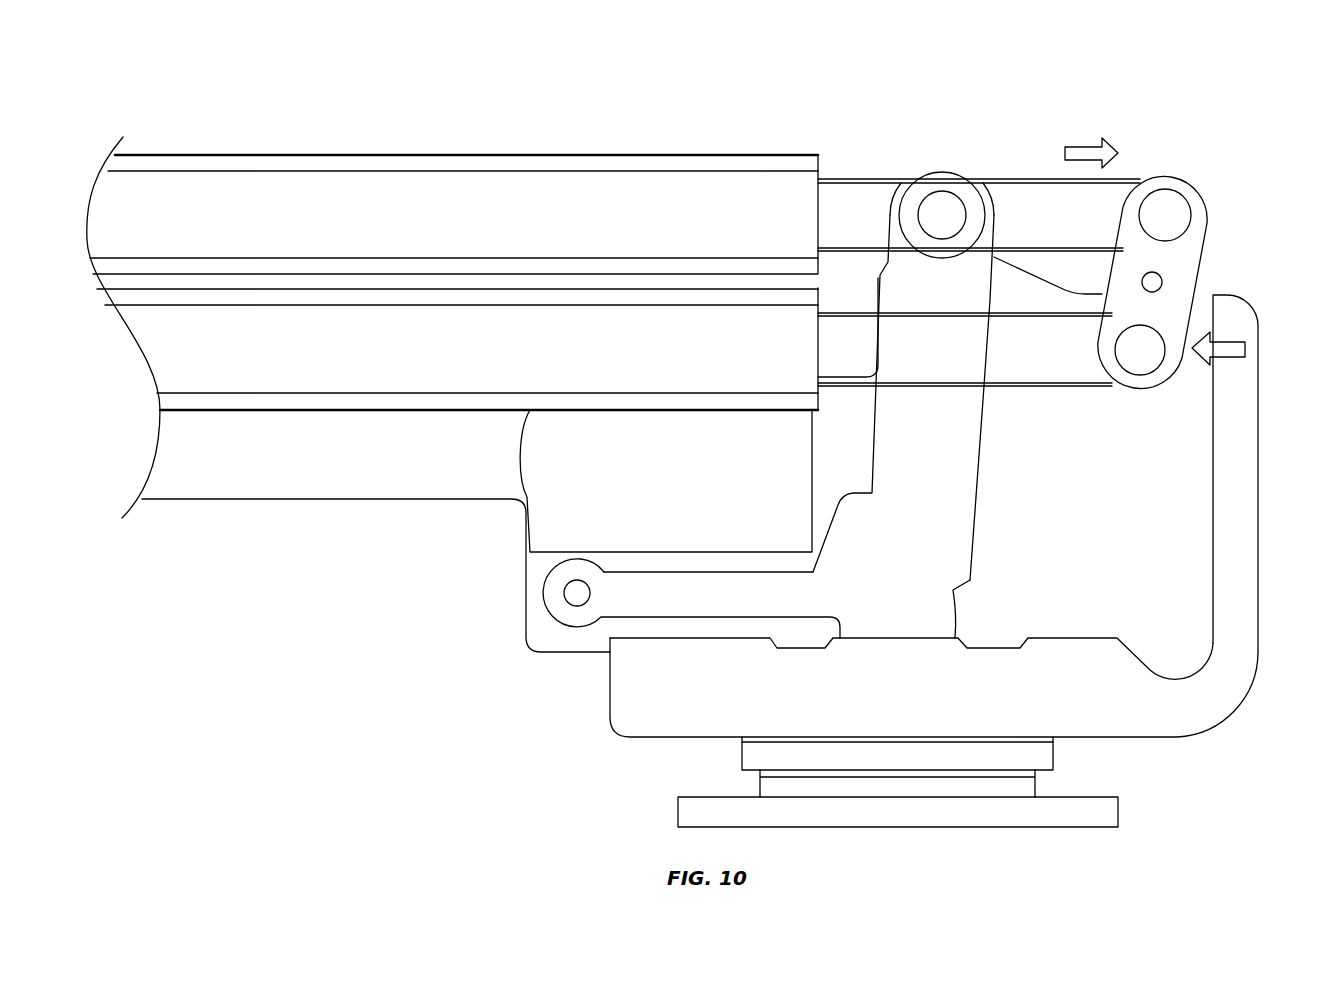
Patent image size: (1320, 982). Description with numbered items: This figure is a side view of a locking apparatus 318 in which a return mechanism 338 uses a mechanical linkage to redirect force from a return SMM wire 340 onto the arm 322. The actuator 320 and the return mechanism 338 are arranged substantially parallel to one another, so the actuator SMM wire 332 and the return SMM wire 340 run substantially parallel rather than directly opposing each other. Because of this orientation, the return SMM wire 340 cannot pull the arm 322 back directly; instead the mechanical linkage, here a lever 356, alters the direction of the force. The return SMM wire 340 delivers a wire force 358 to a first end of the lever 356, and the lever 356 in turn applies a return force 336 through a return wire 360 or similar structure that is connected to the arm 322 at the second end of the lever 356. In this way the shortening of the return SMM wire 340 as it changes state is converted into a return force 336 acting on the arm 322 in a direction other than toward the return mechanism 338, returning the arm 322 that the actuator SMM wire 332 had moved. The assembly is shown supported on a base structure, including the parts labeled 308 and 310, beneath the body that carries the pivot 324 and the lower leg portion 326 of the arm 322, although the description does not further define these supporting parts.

The mounting plate 308 is at (1120, 800).
The mount block 310 is at (1055, 757).
The locking apparatus 318 is at (1236, 108).
The actuator 320 is at (440, 155).
The arm 322 is at (960, 515).
The pivot 324 is at (575, 593).
The lower leg 326 is at (958, 627).
The actuator SMM wire 332 is at (862, 180).
The return force 336 is at (1072, 145).
The return mechanism 338 is at (520, 503).
The return SMM wire 340 is at (1075, 392).
The lever 356 is at (1203, 278).
The wire force 358 is at (1245, 350).
The return wire 360 is at (1010, 178).